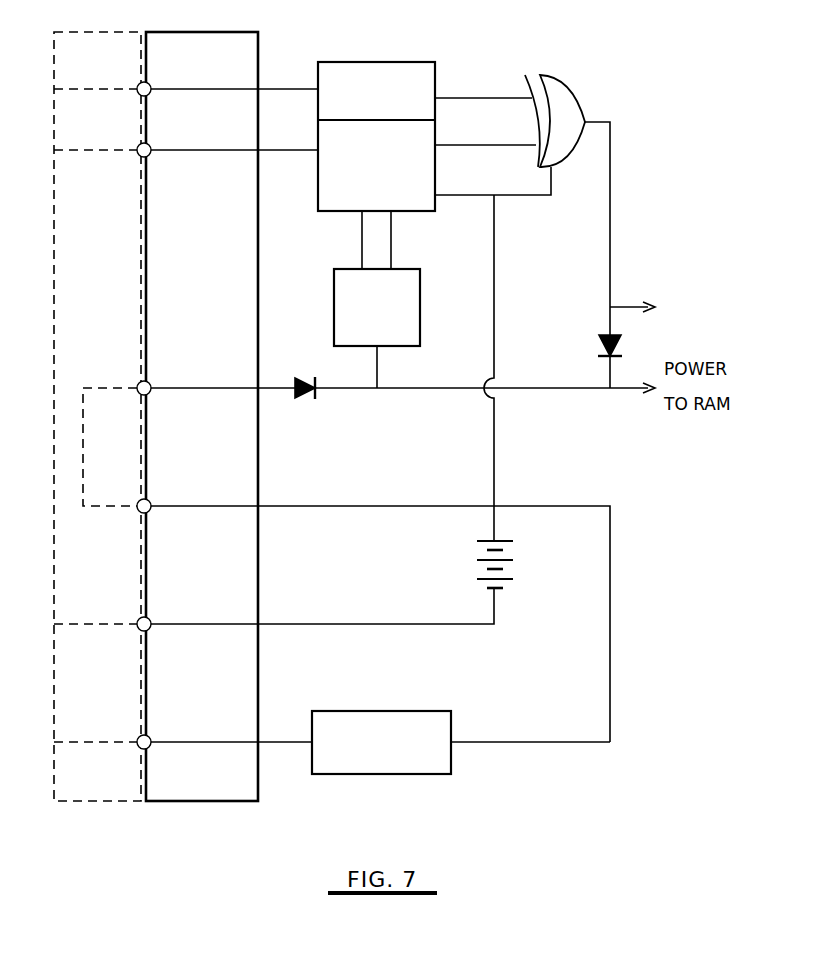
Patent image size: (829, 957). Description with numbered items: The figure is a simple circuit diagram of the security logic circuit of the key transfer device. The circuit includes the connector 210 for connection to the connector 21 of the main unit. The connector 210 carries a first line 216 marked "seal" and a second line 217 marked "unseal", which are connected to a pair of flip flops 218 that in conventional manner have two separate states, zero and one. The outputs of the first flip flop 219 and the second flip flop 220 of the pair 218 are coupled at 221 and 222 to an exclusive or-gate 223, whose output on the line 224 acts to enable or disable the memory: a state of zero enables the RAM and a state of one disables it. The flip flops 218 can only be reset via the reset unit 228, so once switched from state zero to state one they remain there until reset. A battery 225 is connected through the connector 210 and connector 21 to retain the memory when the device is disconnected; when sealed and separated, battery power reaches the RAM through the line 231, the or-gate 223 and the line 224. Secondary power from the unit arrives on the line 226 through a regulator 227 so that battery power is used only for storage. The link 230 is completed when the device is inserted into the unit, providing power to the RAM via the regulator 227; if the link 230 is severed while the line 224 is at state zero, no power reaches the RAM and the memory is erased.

The connector of the main unit 21 is at (97, 48).
The connector 210 is at (235, 42).
The first line 216 is at (228, 90).
The second line 217 is at (224, 152).
The pair of flip flops 218 is at (410, 135).
The first flip flop 219 is at (369, 72).
The second flip flop 220 is at (425, 202).
The flip flop output coupling 221 is at (484, 98).
The flip flop output coupling 222 is at (513, 144).
The exclusive or-gate 223 is at (567, 107).
The output line 224 is at (610, 204).
The battery 225 is at (473, 559).
The secondary power line 226 is at (212, 741).
The regulator 227 is at (423, 720).
The reset unit 228 is at (342, 280).
The link 230 is at (203, 506).
The battery line 231 is at (494, 356).